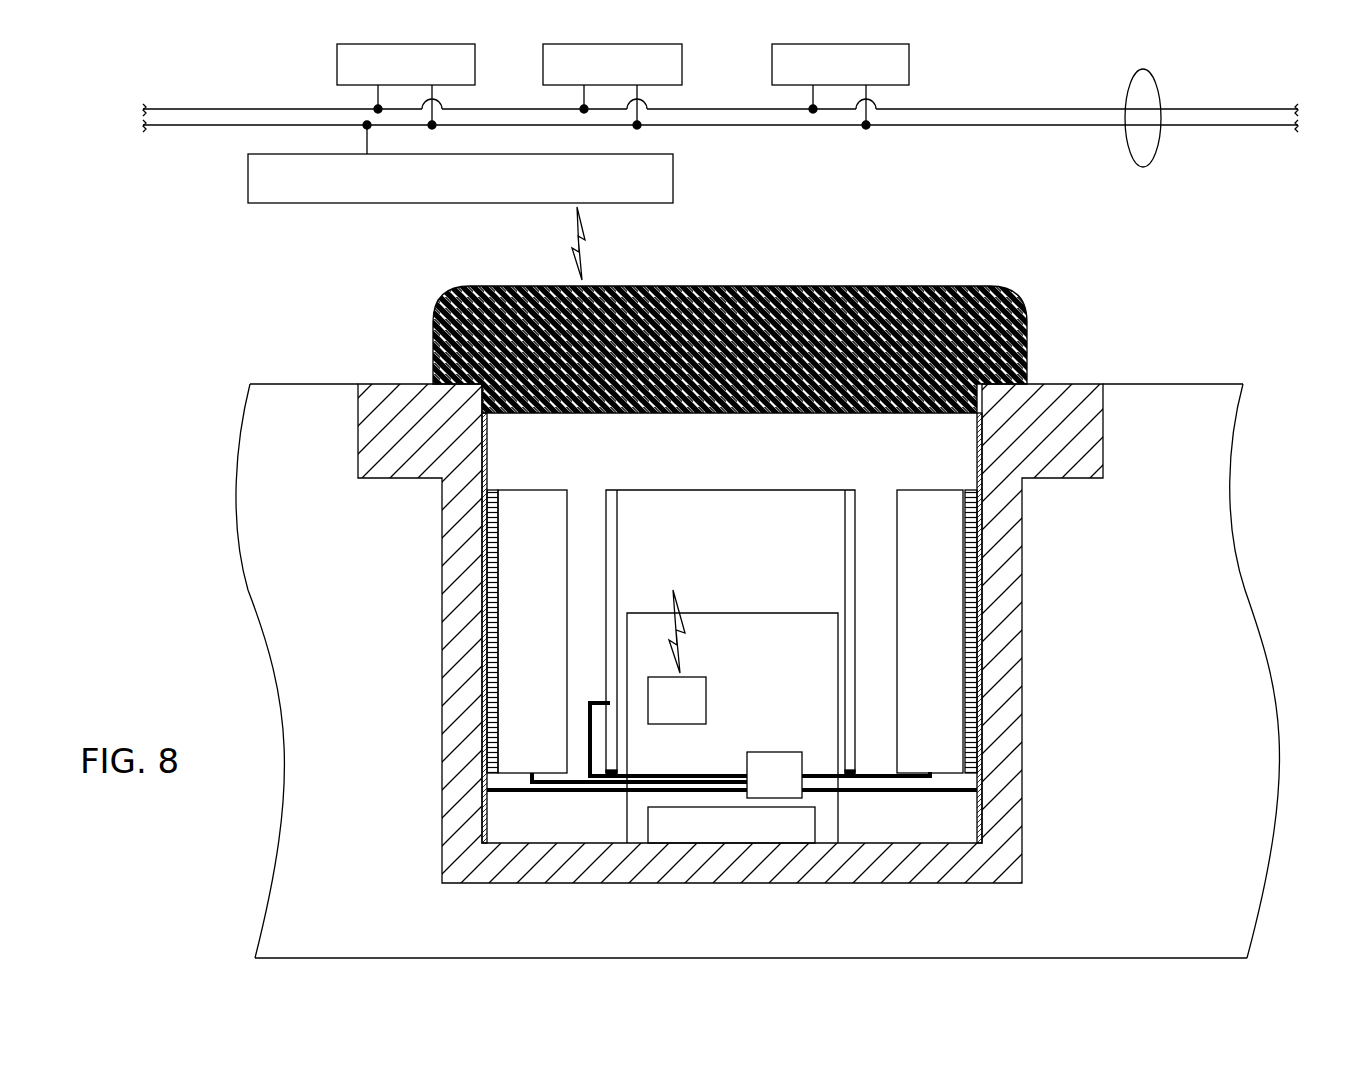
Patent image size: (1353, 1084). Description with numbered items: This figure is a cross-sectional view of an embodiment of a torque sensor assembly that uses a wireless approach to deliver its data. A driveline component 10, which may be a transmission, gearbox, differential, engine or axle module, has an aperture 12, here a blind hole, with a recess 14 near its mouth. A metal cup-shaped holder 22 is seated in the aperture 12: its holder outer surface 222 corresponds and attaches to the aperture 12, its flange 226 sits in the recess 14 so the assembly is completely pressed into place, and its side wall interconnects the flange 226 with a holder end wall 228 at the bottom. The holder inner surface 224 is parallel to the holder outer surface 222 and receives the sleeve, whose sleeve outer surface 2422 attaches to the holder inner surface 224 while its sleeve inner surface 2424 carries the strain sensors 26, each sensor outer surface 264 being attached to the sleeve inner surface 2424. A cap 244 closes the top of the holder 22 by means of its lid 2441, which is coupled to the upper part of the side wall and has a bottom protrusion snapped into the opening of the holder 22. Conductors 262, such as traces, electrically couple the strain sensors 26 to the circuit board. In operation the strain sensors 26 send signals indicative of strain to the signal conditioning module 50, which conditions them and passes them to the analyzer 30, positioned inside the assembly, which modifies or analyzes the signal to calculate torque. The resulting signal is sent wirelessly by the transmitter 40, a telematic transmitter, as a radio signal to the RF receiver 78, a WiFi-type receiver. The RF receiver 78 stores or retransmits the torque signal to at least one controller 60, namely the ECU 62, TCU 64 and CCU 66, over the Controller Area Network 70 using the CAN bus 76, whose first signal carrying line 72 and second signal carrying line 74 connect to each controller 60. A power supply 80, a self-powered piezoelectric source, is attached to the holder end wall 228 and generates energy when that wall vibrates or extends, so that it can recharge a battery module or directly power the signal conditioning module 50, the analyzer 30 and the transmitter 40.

The driveline component 10 is at (372, 695).
The aperture 12 is at (1100, 393).
The recess 14 is at (1098, 468).
The holder 22 is at (1148, 228).
The strain sensor 26 is at (547, 623).
The analyzer 30 is at (750, 670).
The transmitter 40 is at (692, 715).
The signal conditioning module 50 is at (790, 788).
The controller 60 is at (316, 71).
The engine control unit (ECU) 62 is at (406, 86).
The transmission control unit (TCU) 64 is at (612, 86).
The chassis control unit (CCU) 66 is at (840, 86).
The Controller Area Network (CAN) 70 is at (1172, 90).
The first signal carrying line 72 is at (1277, 108).
The second signal carrying line 74 is at (1265, 127).
The CAN bus 76 is at (1155, 87).
The RF receiver 78 is at (460, 162).
The power supply 80 is at (750, 838).
The holder outer surface 222 is at (1020, 827).
The holder inner surface 224 is at (963, 750).
The flange 226 is at (374, 384).
The holder end wall 228 is at (560, 884).
The cap 244 is at (730, 281).
The conductors 262 is at (575, 780).
The sensor outer surface 264 is at (980, 610).
The sleeve outer surface 2422 is at (732, 628).
The sleeve inner surface 2424 is at (790, 477).
The lid 2441 is at (793, 238).